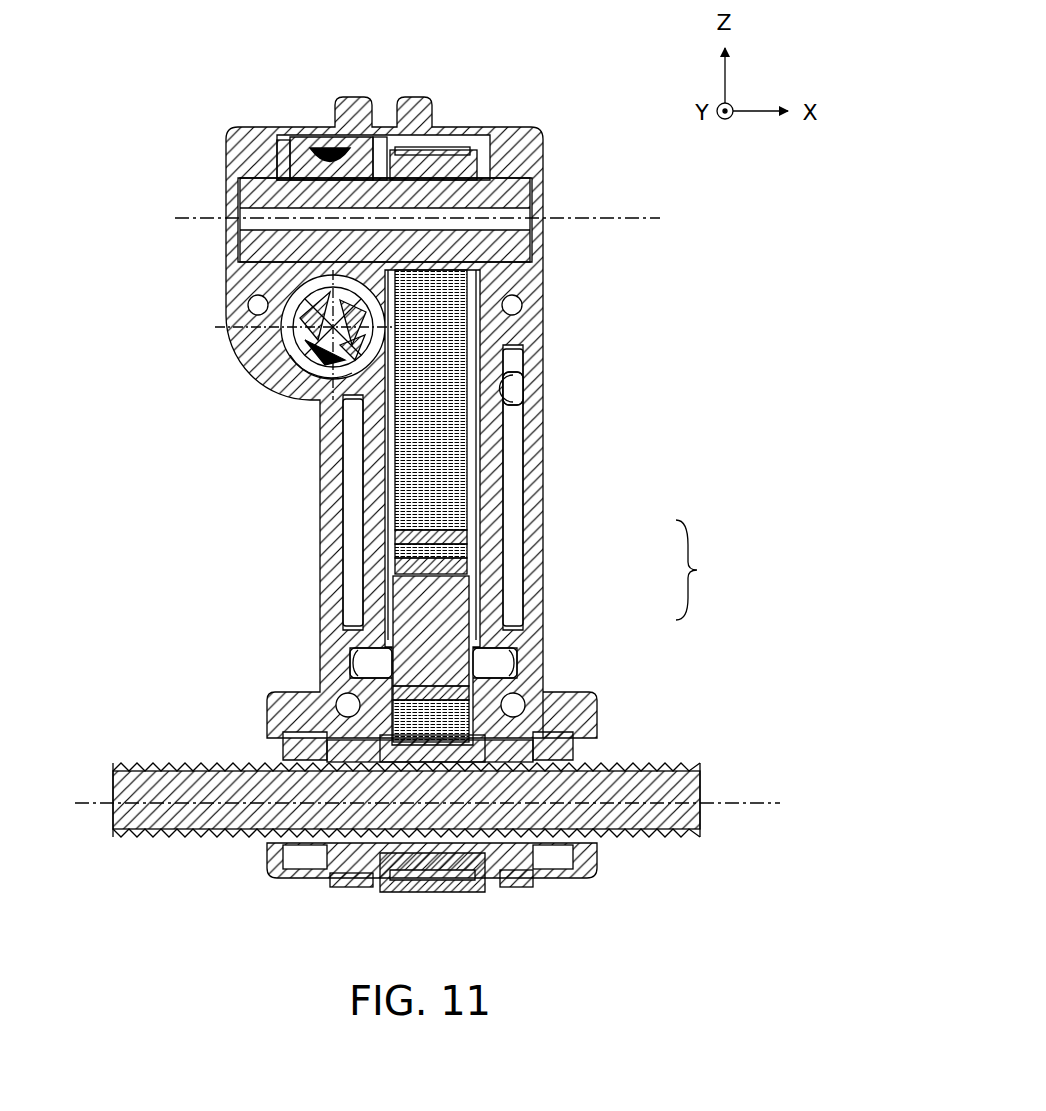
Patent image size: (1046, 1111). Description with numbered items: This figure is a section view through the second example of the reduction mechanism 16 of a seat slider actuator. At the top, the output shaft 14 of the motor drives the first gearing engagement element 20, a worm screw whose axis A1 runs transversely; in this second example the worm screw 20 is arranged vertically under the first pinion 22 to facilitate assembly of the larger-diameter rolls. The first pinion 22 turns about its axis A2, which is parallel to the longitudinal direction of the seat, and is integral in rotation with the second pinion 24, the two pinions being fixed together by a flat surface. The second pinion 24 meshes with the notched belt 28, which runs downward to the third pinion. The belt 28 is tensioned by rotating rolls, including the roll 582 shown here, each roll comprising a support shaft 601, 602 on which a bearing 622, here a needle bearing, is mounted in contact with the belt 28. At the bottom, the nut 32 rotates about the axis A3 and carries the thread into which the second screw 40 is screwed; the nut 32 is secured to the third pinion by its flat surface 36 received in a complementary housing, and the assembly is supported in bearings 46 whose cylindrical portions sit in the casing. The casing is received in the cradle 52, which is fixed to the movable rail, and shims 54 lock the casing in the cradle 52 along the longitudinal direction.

The reduction mechanism 16 is at (124, 86).
The first pinion 22 is at (345, 162).
The second pinion 24 is at (435, 270).
The first gearing engagement element 20 is at (286, 292).
The output shaft 14 is at (311, 385).
The belt 28 is at (440, 460).
The support shaft 601 is at (526, 388).
The support shaft 602 is at (492, 662).
The bearing 622 is at (450, 655).
The roll 582 is at (711, 570).
The shim 54 is at (566, 745).
The second screw 40 is at (157, 785).
The cradle 52 is at (587, 880).
The nut 32 is at (387, 887).
The flat surface 36 is at (470, 892).
The bearing 46 is at (516, 866).
The axis A1 is at (276, 352).
The axis A2 is at (626, 216).
The axis A3 is at (739, 802).